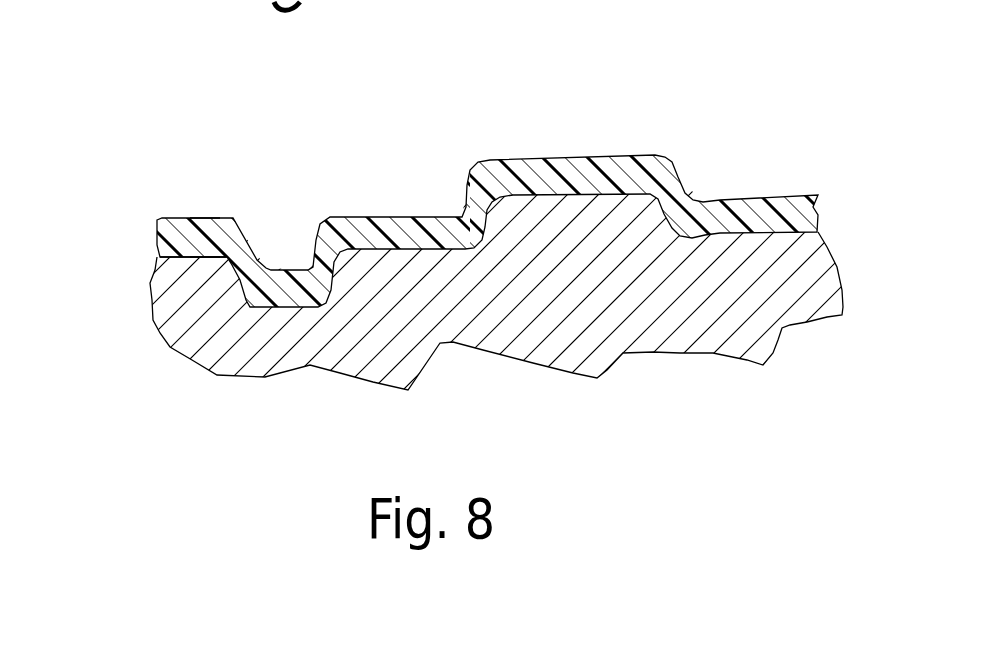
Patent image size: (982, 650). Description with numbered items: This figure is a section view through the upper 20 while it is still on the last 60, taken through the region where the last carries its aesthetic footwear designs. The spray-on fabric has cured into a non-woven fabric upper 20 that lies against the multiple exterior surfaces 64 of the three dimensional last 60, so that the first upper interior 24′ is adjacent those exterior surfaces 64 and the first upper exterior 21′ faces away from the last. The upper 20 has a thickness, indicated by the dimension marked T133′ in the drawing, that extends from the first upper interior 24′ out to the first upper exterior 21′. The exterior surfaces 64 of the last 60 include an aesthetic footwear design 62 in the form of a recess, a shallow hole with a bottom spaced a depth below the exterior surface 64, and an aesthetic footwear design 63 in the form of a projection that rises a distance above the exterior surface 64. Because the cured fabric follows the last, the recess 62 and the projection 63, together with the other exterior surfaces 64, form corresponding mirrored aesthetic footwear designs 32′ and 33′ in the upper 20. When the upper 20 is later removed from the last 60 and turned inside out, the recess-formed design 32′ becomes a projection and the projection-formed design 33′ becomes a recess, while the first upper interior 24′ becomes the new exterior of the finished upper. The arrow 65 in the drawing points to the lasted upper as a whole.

The upper 20 is at (144, 209).
The first upper exterior 21′ is at (178, 218).
The coating thickness T133′ is at (205, 330).
The aesthetic footwear design 32′ is at (278, 255).
The aesthetic footwear design 33′ is at (583, 157).
The first upper interior 24′ is at (187, 257).
The last 60 is at (808, 303).
The aesthetic footwear design 62 is at (343, 284).
The aesthetic footwear design 63 is at (567, 231).
The exterior surface 64 is at (400, 253).
The seal assembly 65 is at (582, 57).